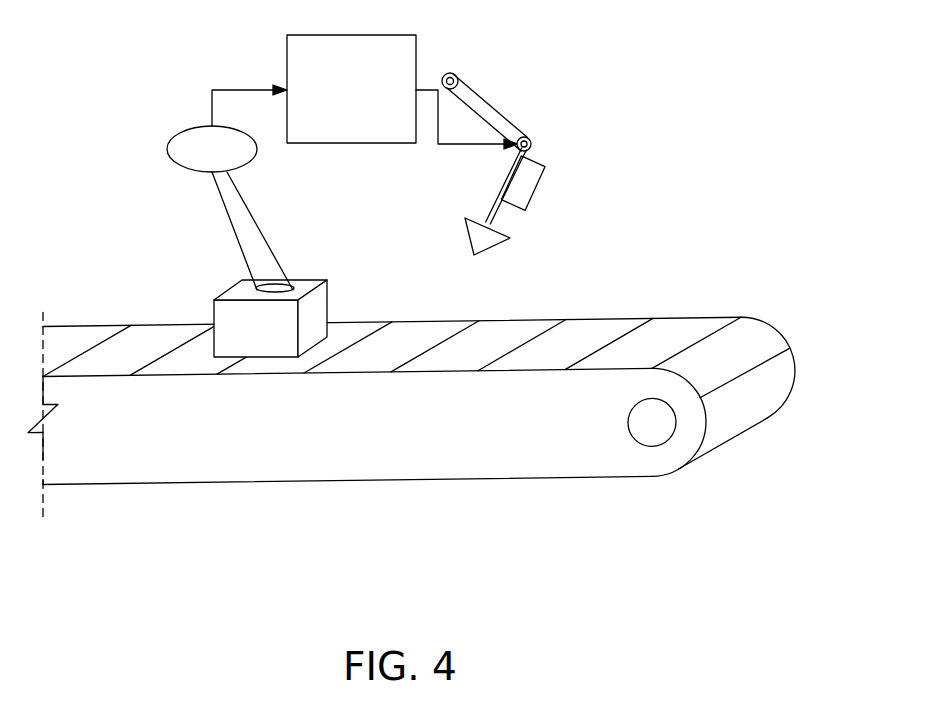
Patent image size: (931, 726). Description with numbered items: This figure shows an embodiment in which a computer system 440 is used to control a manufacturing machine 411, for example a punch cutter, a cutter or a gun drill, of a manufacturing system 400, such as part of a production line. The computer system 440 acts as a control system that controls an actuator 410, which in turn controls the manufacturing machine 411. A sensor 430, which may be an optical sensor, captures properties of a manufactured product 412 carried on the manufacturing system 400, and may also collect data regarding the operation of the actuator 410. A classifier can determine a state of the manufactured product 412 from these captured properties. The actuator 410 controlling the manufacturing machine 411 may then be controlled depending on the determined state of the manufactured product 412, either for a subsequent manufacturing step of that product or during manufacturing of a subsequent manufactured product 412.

The manufacturing system 400 is at (352, 481).
The actuator 410 is at (540, 184).
The manufacturing machine 411 is at (492, 108).
The manufactured product 412 is at (330, 290).
The sensor 430 is at (166, 150).
The computer system 440 is at (286, 60).